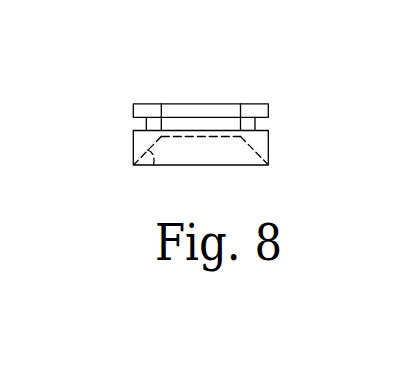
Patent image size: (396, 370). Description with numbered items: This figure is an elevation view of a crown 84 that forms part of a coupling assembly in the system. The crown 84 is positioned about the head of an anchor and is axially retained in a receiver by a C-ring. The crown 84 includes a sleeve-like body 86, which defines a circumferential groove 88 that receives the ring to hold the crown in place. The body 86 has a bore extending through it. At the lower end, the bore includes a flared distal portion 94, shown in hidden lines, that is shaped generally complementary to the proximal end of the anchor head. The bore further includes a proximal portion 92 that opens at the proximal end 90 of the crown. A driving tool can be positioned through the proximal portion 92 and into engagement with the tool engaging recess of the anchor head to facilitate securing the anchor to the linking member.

The crown 84 is at (214, 121).
The sleeve-like body 86 is at (268, 143).
The circumferential groove 88 is at (146, 122).
The proximal end 90 is at (133, 115).
The proximal portion 92 is at (186, 113).
The flared distal portion 94 is at (153, 166).